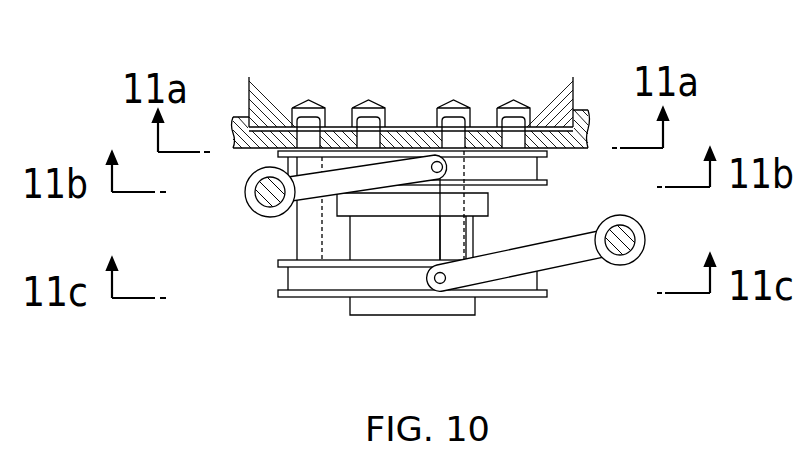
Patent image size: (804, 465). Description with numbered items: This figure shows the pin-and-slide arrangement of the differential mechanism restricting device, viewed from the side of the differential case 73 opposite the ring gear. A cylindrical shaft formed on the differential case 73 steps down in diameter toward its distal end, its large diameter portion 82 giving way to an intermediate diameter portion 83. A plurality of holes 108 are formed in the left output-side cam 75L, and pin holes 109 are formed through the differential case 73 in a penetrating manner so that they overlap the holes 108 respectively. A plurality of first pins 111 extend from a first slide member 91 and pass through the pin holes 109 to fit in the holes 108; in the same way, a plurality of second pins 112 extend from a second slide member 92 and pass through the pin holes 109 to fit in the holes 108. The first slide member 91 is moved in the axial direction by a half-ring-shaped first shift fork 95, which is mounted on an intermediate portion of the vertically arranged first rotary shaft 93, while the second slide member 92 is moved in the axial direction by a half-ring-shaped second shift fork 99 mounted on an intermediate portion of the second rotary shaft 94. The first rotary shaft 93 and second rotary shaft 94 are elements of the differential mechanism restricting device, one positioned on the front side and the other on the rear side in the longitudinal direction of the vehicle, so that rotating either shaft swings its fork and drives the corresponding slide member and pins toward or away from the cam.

The differential case 73 is at (587, 100).
The left output-side cam 75L is at (540, 90).
The large diameter portion 82 is at (490, 208).
The intermediate diameter portion 83 is at (476, 234).
The first slide member 91 is at (530, 166).
The second slide member 92 is at (300, 279).
The first rotary shaft 93 is at (260, 198).
The second rotary shaft 94 is at (628, 250).
The first shift fork 95 is at (383, 174).
The second shift fork 99 is at (510, 264).
The holes 108 is at (310, 108).
The pin holes 109 is at (299, 138).
The first pins 111 is at (352, 131).
The second pins 112 is at (457, 195).